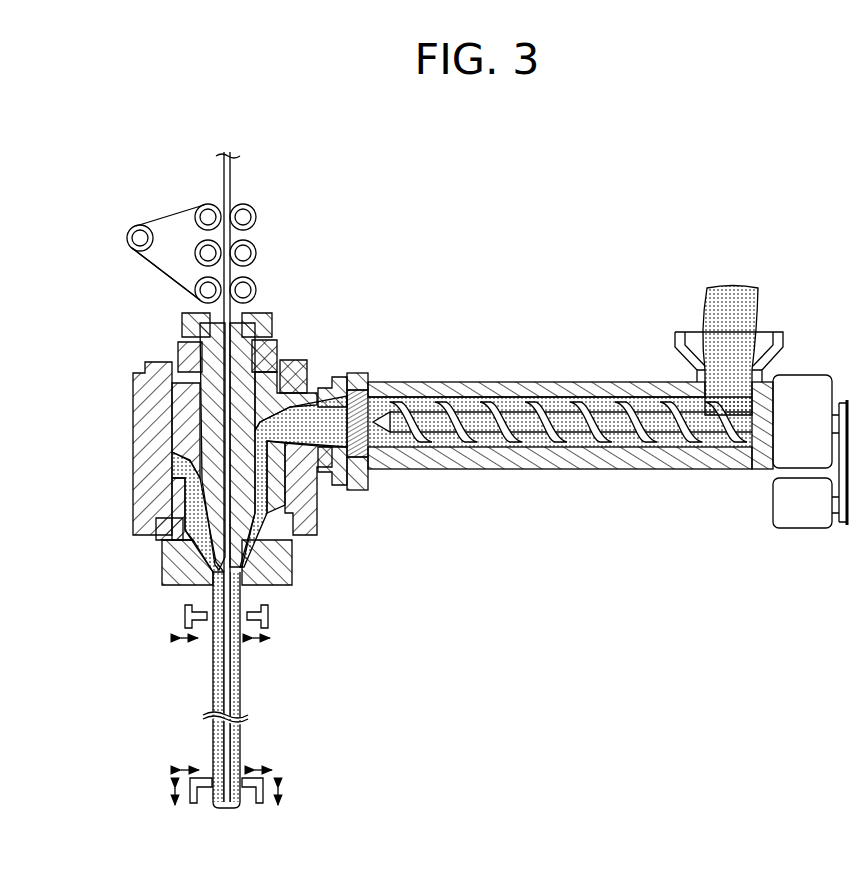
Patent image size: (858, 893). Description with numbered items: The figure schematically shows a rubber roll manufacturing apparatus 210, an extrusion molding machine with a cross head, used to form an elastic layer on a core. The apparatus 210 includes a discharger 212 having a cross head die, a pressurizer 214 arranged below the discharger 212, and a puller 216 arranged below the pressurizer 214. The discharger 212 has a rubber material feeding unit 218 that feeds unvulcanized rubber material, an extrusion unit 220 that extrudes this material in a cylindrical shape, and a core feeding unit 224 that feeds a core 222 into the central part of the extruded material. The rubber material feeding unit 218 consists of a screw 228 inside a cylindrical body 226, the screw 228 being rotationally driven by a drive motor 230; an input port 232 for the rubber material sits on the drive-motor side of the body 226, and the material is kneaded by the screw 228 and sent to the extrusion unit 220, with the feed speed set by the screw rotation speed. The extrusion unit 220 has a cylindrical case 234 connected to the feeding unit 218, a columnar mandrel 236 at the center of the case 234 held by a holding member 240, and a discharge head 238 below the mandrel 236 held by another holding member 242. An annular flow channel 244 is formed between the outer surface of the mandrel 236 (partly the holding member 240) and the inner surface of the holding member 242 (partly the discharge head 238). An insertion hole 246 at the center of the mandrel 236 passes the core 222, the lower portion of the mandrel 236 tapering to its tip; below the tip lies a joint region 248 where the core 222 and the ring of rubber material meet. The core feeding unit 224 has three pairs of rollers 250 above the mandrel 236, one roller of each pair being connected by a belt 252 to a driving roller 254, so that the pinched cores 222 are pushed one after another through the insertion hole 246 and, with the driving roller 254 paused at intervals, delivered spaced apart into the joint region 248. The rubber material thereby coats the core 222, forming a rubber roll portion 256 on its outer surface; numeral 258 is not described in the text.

The rubber roll manufacturing apparatus 210 is at (437, 223).
The discharger 212 is at (211, 443).
The pressurizer 214 is at (175, 620).
The puller 216 is at (150, 796).
The rubber material feeding unit 218 is at (578, 427).
The extrusion unit 220 is at (303, 562).
The core 222 is at (231, 181).
The core feeding unit 224 is at (206, 230).
The body 226 is at (580, 383).
The screw 228 is at (622, 420).
The drive motor 230 is at (812, 515).
The input port 232 is at (705, 342).
The case 234 is at (310, 386).
The mandrel 236 is at (320, 376).
The discharge head 238 is at (247, 577).
The holding member 240 is at (282, 392).
The holding member 242 is at (278, 553).
The annular flow channel 244 is at (277, 514).
The insertion hole 246 is at (232, 352).
The joint region 248 is at (213, 567).
The pairs of rollers 250 is at (257, 288).
The belt 252 is at (166, 270).
The driving roller 254 is at (133, 248).
The rubber roll portion 256 is at (200, 695).
The outlet 258 is at (205, 575).